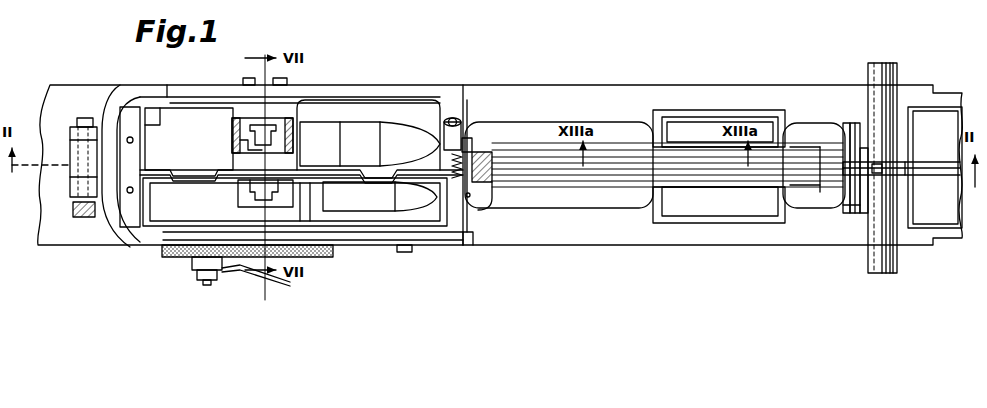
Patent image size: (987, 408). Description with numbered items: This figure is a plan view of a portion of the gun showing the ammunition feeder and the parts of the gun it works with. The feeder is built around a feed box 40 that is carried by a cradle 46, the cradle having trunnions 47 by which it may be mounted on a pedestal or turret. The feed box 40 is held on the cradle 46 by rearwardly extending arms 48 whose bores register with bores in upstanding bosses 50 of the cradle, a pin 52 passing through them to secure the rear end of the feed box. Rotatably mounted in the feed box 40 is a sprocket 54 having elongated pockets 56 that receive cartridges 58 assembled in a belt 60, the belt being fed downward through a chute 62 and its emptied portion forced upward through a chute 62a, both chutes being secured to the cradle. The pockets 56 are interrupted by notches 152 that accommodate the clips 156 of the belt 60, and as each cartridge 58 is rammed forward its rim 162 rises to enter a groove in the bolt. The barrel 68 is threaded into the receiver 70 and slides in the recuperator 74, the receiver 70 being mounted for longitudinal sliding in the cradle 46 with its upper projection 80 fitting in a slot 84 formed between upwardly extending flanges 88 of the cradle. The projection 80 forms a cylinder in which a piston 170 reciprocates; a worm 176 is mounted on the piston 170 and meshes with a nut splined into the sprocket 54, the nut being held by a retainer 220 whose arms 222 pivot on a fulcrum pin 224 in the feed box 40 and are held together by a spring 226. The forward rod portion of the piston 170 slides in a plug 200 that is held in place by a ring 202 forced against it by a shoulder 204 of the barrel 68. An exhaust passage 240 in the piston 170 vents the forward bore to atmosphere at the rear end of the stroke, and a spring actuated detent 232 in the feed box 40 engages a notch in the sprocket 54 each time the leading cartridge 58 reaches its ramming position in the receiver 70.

The feed box 40 is at (165, 86).
The cradle 46 is at (78, 88).
The trunnions 47 is at (870, 74).
The rearwardly extending arms 48 is at (112, 100).
The upstanding bosses 50 is at (70, 148).
The pin 52 is at (75, 214).
The sprocket 54 is at (350, 145).
The pockets 56 is at (180, 135).
The cartridges 58 is at (375, 210).
The belt 60 is at (262, 152).
The chute 62 is at (345, 226).
The chute 62a is at (275, 125).
The barrel 68 is at (863, 195).
The receiver 70 is at (626, 140).
The recuperator 74 is at (942, 86).
The upper projection 80 is at (682, 152).
The slot 84 is at (780, 152).
The flanges 88 is at (700, 125).
The notches 152 is at (308, 120).
The clips 156 is at (240, 145).
The rim 162 is at (140, 226).
The piston 170 is at (883, 161).
The worm 176 is at (485, 180).
The plug 200 is at (846, 125).
The ring 202 is at (860, 120).
The shoulder 204 is at (850, 207).
The retainer 220 is at (480, 136).
The arms 222 is at (474, 148).
The fulcrum pin 224 is at (492, 160).
The spring 226 is at (440, 178).
The detent 232 is at (452, 118).
The exhaust passage 240 is at (880, 172).